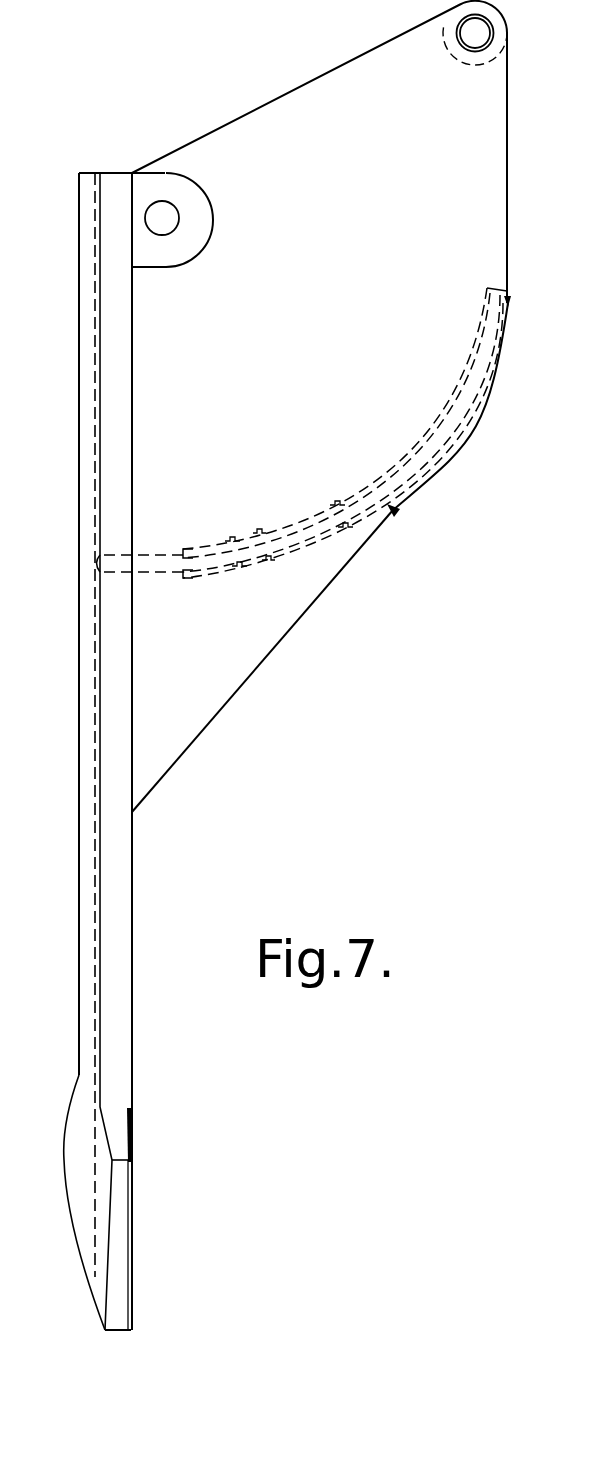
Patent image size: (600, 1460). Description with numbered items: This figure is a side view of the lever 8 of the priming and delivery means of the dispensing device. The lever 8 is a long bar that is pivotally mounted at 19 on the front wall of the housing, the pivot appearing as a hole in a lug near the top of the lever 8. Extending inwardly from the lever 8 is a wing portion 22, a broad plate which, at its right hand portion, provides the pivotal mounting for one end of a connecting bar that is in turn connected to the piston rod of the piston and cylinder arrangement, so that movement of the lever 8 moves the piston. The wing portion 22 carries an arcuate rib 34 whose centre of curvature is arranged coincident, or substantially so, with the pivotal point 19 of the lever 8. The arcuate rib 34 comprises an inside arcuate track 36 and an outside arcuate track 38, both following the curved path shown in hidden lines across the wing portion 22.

The lever 8 is at (102, 923).
The pivotal mounting 19 is at (160, 213).
The wing portion 22 is at (365, 168).
The arcuate rib 34 is at (310, 533).
The inside arcuate track 36 is at (282, 517).
The outside arcuate track 38 is at (400, 513).